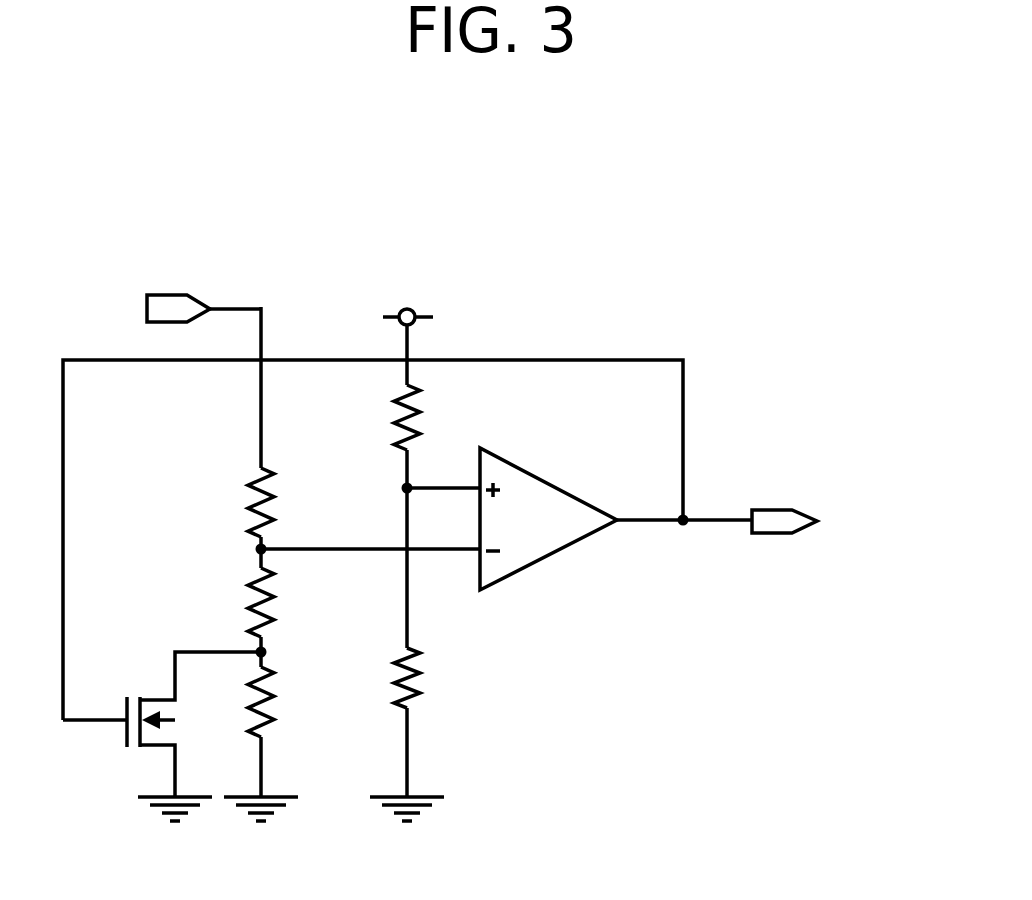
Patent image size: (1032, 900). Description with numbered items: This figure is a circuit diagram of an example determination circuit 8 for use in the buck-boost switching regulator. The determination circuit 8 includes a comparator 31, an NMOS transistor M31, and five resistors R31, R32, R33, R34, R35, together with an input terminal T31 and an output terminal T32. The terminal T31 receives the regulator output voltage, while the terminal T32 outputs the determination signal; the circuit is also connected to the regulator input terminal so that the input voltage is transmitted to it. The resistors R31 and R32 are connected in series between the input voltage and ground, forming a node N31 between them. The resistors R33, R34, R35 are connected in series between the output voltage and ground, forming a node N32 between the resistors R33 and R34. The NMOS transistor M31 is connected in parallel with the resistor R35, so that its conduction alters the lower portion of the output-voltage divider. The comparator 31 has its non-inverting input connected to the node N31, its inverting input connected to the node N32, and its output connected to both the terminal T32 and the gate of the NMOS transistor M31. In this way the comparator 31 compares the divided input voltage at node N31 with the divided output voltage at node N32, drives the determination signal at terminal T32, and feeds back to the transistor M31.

The determination circuit 8 is at (553, 283).
The input terminal T31 is at (183, 273).
The output terminal T32 is at (775, 508).
The resistor R31 is at (437, 417).
The resistor R32 is at (439, 678).
The resistor R33 is at (294, 502).
The resistor R34 is at (294, 602).
The resistor R35 is at (294, 702).
The node N31 is at (404, 486).
The node N32 is at (257, 551).
The NMOS transistor M31 is at (165, 722).
The comparator 31 is at (556, 551).